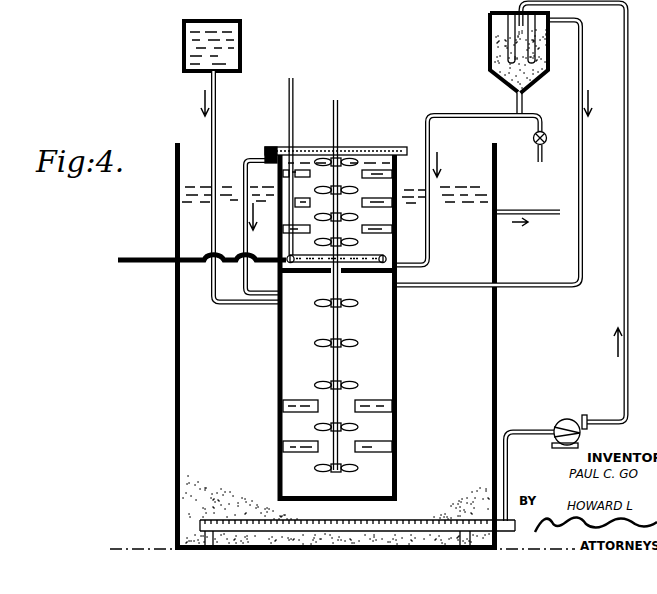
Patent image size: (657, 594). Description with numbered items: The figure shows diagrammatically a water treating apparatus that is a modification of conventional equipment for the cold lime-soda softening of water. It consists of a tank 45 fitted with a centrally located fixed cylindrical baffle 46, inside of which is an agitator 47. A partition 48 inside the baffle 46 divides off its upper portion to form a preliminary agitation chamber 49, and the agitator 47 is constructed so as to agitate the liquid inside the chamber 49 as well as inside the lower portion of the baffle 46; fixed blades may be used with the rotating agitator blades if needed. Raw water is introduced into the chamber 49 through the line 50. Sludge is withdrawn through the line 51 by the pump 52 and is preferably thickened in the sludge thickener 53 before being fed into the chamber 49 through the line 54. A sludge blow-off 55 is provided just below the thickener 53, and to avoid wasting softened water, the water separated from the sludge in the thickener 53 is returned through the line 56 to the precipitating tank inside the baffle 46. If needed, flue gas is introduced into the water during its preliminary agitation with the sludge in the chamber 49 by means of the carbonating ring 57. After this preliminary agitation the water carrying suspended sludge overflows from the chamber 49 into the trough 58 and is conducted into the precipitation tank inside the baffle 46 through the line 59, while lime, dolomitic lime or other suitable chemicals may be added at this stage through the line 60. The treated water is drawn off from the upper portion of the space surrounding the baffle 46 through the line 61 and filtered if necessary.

The tank 45 is at (502, 337).
The fixed cylindrical baffle 46 is at (400, 345).
The agitator 47 is at (340, 358).
The partition 48 is at (372, 275).
The preliminary agitation chamber 49 is at (428, 210).
The line 50 is at (138, 258).
The line 51 is at (523, 428).
The pump 52 is at (563, 419).
The sludge thickener 53 is at (488, 41).
The line 54 is at (456, 113).
The sludge blow-off 55 is at (545, 126).
The line 56 is at (585, 190).
The carbonating ring 57 is at (313, 264).
The trough 58 is at (266, 150).
The line 59 is at (243, 237).
The line 60 is at (211, 237).
The line 61 is at (527, 207).